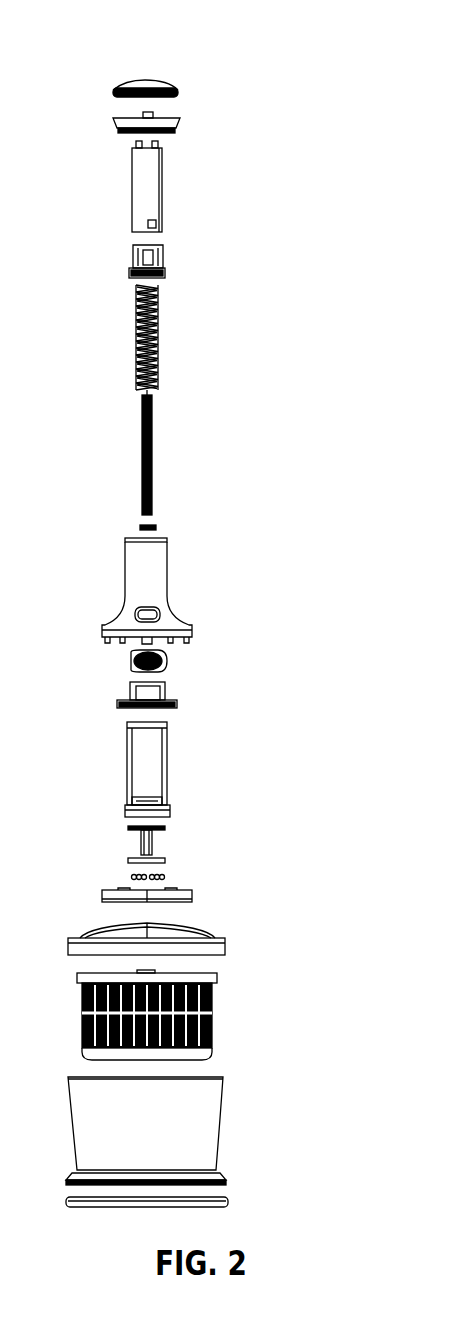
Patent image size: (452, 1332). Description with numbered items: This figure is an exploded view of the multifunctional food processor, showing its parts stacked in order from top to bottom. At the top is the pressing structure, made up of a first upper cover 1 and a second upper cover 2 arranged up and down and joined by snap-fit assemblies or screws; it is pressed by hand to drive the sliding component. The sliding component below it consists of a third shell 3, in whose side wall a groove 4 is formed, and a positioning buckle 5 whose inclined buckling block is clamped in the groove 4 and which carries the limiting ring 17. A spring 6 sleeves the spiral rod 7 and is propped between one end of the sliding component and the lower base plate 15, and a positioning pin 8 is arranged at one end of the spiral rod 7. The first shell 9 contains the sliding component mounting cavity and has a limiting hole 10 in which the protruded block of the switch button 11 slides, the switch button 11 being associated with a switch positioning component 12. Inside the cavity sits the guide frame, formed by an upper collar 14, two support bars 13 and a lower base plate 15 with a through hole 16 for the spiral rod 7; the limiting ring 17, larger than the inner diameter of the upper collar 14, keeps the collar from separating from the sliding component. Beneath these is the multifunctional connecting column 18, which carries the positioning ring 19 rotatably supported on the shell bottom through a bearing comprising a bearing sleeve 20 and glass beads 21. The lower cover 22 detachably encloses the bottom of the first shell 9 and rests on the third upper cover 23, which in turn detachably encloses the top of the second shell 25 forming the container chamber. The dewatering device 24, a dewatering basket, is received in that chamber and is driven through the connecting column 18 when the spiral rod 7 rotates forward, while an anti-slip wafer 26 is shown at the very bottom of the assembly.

The first upper cover 1 is at (231, 50).
The second upper cover 2 is at (231, 87).
The third shell 3 is at (241, 157).
The groove 4 is at (249, 175).
The positioning buckle 5 is at (241, 220).
The positioning ring 19 is at (239, 257).
The spring 6 is at (243, 337).
The spiral rod 7 is at (246, 426).
The positioning pin 8 is at (245, 457).
The first shell 9 is at (226, 539).
The limiting hole 10 is at (242, 557).
The switch button 11 is at (240, 604).
The switch positioning component 12 is at (233, 649).
The upper collar 14 is at (238, 720).
The support bar 13 is at (241, 741).
The lower base plate 15 is at (237, 767).
The through hole 16 is at (102, 775).
The limiting ring 17 is at (239, 792).
The multifunctional connecting column 18 is at (245, 822).
The bearing sleeve 20 is at (239, 849).
The glass bead 21 is at (104, 842).
The lower cover 22 is at (117, 881).
The third upper cover 23 is at (209, 917).
The dewatering device 24 is at (213, 1010).
The second shell 25 is at (208, 1125).
The anti-slip wafer 26 is at (208, 1173).